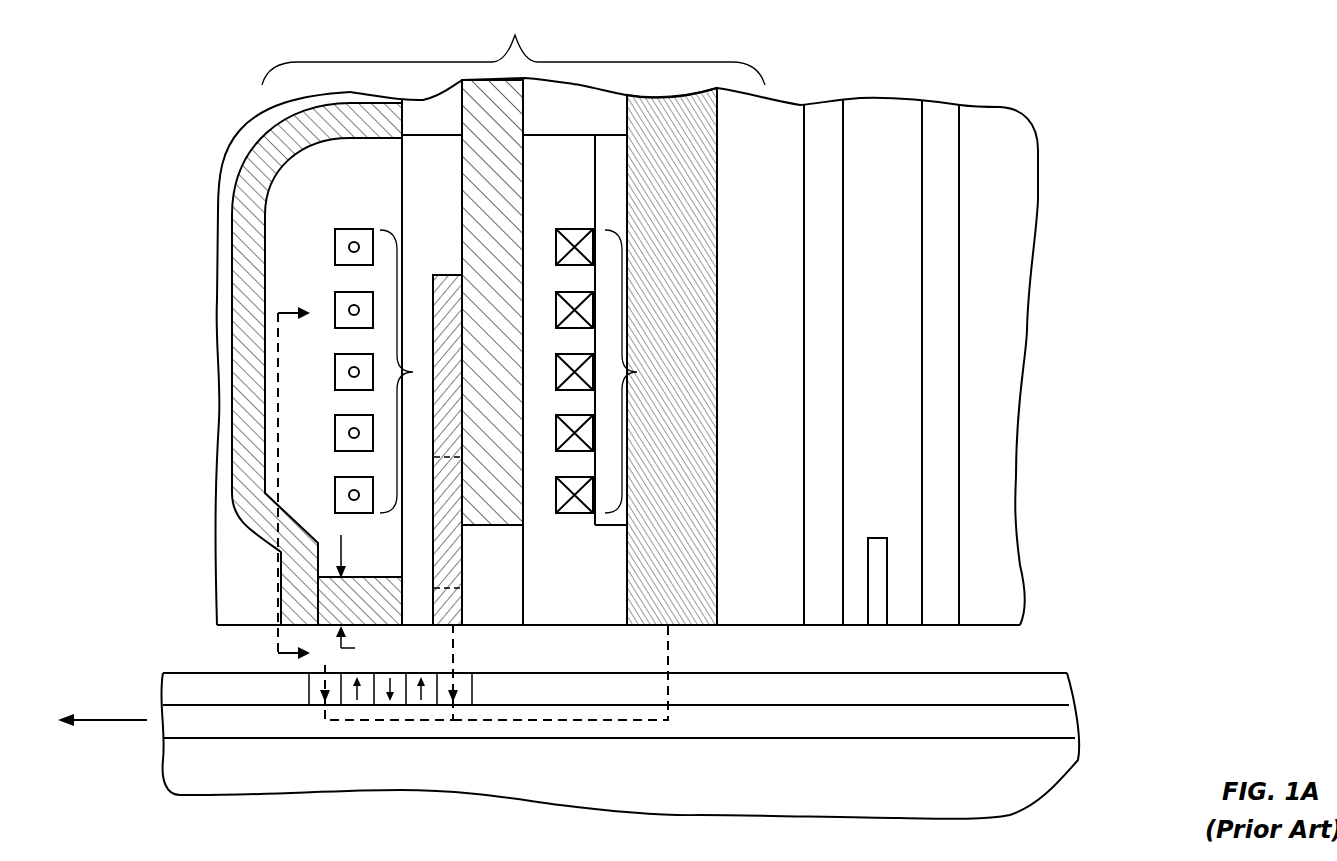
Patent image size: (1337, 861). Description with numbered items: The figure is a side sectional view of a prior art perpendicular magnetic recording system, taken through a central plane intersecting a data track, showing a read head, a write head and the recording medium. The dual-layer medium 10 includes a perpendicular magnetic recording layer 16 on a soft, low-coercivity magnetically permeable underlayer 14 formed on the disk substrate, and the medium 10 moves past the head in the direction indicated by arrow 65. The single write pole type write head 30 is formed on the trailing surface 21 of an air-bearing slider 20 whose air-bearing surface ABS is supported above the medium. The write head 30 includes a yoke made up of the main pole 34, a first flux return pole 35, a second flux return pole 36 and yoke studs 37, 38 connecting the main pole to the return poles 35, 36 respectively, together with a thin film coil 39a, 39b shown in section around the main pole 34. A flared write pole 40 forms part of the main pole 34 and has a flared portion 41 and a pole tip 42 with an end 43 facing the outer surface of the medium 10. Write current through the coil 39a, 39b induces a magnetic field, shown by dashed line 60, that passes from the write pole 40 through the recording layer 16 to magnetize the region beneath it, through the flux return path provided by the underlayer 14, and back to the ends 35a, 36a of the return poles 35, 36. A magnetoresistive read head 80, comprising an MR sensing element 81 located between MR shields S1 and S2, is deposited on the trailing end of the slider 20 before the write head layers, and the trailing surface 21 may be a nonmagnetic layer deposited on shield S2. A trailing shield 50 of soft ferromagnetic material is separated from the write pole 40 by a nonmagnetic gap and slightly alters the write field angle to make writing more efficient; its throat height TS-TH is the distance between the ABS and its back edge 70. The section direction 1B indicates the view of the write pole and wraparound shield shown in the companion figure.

The medium 10 is at (1062, 802).
The soft underlayer 14 is at (1063, 725).
The recording layer 16 is at (1057, 690).
The air-bearing slider 20 is at (1018, 368).
The trailing surface 21 is at (717, 200).
The write head 30 is at (513, 45).
The main pole 34 is at (517, 192).
The first flux return pole 35 is at (702, 417).
The end of first flux return pole 35a is at (687, 627).
The second flux return pole 36 is at (238, 220).
The end of second flux return pole 36a is at (283, 628).
The yoke stud 37 is at (563, 97).
The yoke stud 38 is at (438, 105).
The thin film coil 39a is at (623, 371).
The thin film coil 39b is at (399, 371).
The flared write pole 40 is at (455, 275).
The flared portion 41 is at (463, 570).
The pole tip 42 is at (463, 610).
The end of pole tip 43 is at (450, 627).
The trailing shield 50 is at (322, 612).
The magnetic field 60 is at (398, 722).
The arrow indicating medium motion direction 65 is at (100, 722).
The back edge 70 is at (330, 577).
The magnetoresistive read head 80 is at (960, 85).
The MR sensing element 81 is at (878, 618).
The view direction 1B- 1B is at (313, 484).
The MR shield S1 is at (948, 578).
The MR shield S2 is at (818, 532).
The air-bearing surface ABS is at (583, 627).
The trailing shield throat height TS-TH is at (382, 644).